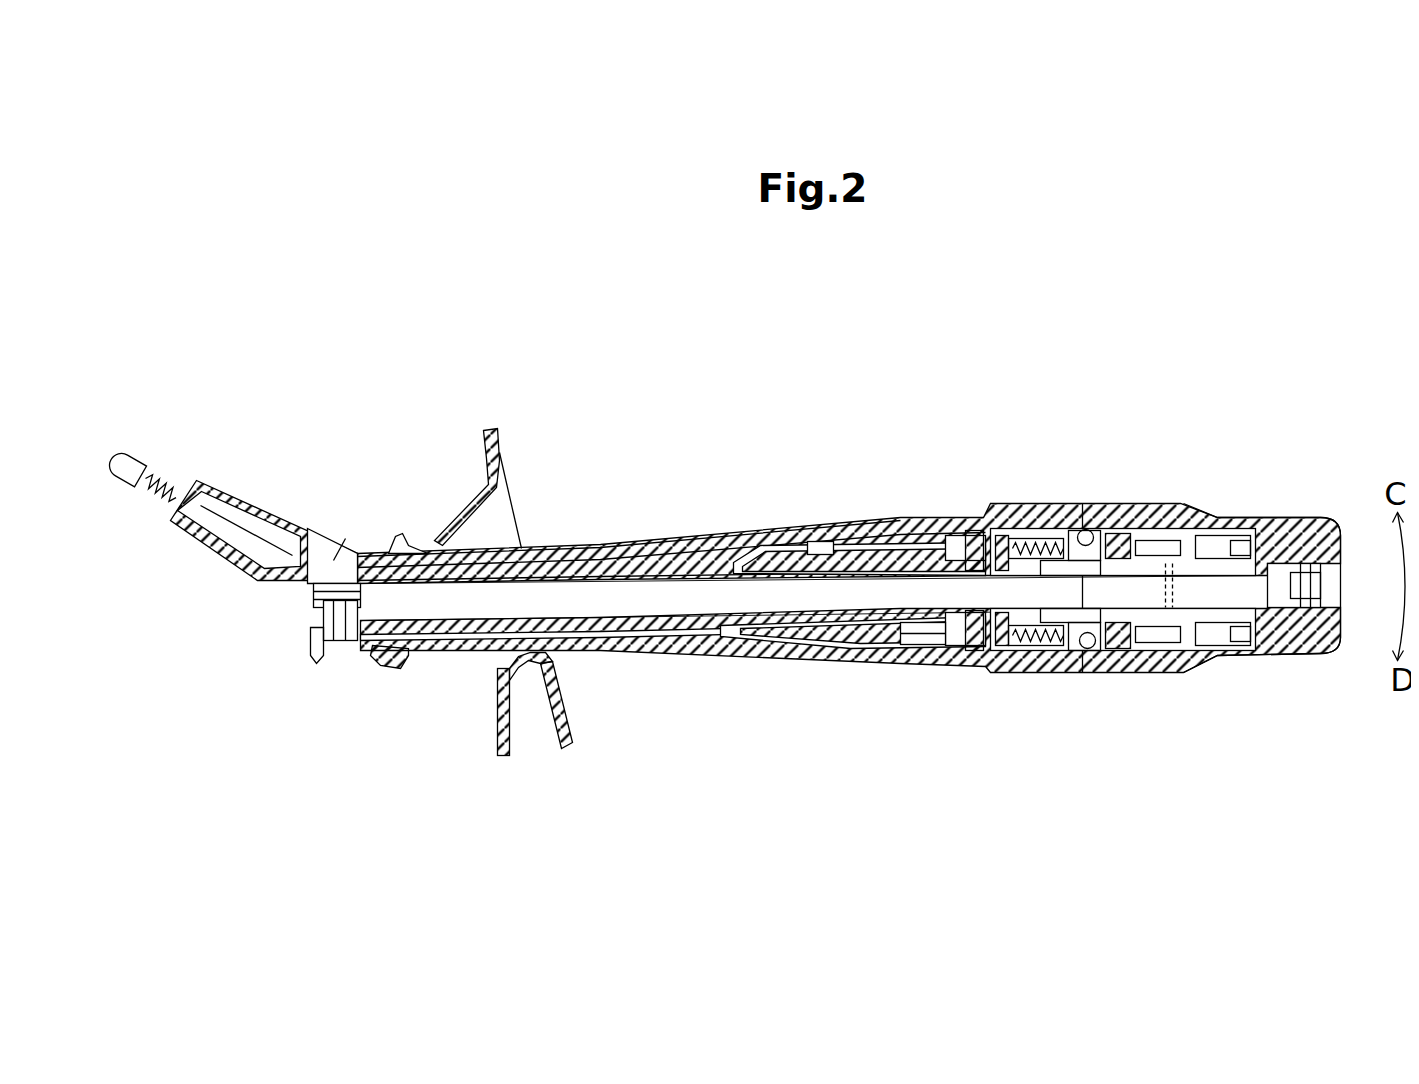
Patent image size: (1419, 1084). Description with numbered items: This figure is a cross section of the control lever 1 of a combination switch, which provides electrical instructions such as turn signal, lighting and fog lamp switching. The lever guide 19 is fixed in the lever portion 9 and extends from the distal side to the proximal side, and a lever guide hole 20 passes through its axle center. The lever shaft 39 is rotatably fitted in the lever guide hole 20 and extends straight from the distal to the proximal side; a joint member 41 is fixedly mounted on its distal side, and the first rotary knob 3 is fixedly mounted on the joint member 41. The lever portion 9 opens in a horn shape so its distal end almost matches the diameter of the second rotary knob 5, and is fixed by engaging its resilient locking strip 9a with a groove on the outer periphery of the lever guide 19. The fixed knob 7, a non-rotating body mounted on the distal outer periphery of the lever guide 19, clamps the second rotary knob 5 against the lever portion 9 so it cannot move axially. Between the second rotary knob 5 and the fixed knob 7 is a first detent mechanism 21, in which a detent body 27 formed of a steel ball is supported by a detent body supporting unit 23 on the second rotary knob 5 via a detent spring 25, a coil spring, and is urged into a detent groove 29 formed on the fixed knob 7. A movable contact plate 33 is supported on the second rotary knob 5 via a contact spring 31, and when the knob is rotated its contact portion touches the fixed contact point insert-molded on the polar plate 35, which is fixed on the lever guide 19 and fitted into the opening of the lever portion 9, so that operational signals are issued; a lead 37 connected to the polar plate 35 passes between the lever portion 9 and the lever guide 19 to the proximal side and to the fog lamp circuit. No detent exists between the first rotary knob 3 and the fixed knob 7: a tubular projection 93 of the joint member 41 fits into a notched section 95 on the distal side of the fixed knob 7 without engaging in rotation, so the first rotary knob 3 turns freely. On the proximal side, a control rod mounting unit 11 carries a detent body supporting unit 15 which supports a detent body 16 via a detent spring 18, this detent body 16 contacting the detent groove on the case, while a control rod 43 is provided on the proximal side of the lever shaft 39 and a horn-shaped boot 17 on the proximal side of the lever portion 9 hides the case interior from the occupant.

The control lever 1 is at (926, 448).
The first rotary knob 3 is at (1242, 517).
The second rotary knob 5 is at (1012, 512).
The fixed knob 7 is at (1108, 504).
The lever portion 9 is at (765, 540).
The resilient locking strip 9a is at (805, 545).
The control rod mounting unit 11 is at (334, 560).
The detent body supporting unit 15 is at (238, 500).
The detent body 16 is at (120, 450).
The boot 17 is at (484, 430).
The detent spring 18 is at (150, 472).
The lever guide 19 is at (640, 540).
The lever guide hole 20 is at (698, 540).
The first detent mechanism 21 is at (1080, 525).
The detent body supporting unit 23 is at (1022, 662).
The detent spring 25 is at (1050, 662).
The detent body 27 is at (1090, 662).
The detent groove 29 is at (1070, 668).
The contact spring 31 is at (982, 662).
The movable contact plate 33 is at (962, 660).
The polar plate 35 is at (932, 665).
The lead 37 is at (835, 655).
The lever shaft 39 is at (662, 607).
The joint member 41 is at (1244, 658).
The control rod 43 is at (310, 627).
The tubular projection 93 is at (1205, 668).
The notched section 95 is at (1166, 670).